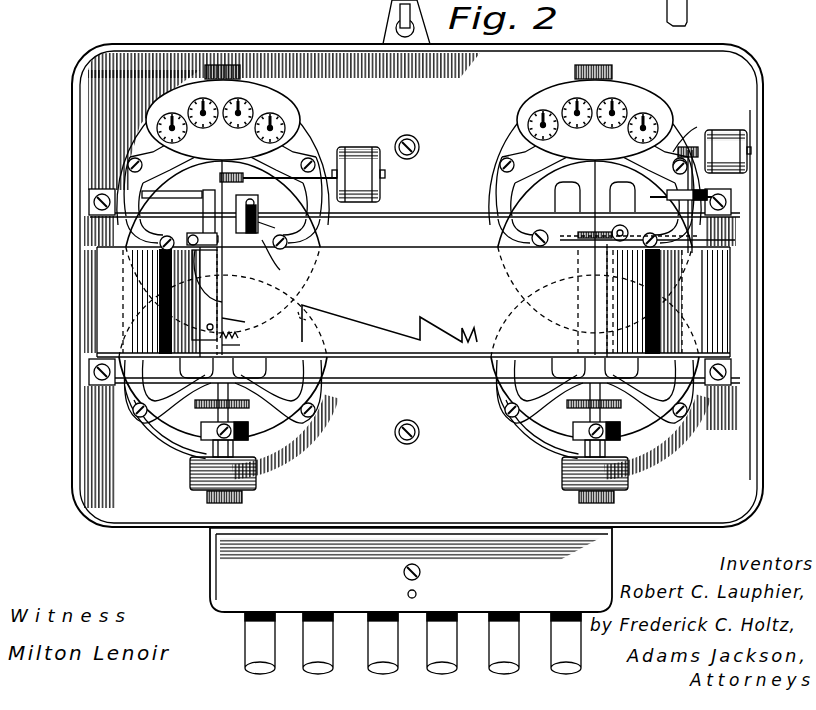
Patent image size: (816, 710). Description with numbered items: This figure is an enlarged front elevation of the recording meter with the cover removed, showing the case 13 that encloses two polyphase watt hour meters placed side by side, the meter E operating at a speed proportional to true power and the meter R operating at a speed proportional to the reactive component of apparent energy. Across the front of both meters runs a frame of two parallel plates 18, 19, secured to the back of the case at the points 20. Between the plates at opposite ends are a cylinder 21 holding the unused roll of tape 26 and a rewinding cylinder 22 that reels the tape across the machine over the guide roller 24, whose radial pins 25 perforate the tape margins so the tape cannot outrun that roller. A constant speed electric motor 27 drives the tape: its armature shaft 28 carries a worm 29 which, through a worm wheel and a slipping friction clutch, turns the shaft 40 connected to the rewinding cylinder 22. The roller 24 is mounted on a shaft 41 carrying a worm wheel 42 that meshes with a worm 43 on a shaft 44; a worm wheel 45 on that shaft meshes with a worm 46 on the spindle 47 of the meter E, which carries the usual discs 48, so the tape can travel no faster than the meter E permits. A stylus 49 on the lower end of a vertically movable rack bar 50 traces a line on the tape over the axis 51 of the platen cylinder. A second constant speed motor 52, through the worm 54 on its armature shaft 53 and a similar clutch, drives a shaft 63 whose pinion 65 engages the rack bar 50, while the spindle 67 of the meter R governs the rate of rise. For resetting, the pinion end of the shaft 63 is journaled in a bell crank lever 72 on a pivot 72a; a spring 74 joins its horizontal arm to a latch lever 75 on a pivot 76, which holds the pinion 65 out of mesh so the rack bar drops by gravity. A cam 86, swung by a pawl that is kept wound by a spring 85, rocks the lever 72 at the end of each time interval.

The case 13 is at (712, 46).
The worm 46 is at (690, 10).
The polyphase watt hour meter R is at (312, 133).
The polyphase watt hour meter E is at (500, 135).
The plate 18 is at (418, 217).
The plate 19 is at (447, 358).
The securing point 20 is at (90, 199).
The cylinder 21 is at (100, 317).
The rewinding cylinder 22 is at (748, 276).
The guide roller 24 is at (580, 355).
The radial pins 25 is at (241, 346).
The tape 26 is at (392, 250).
The constant speed electric motor 27 is at (750, 140).
The armature shaft 28 is at (682, 146).
The worm 29 is at (698, 150).
The shaft 40 is at (693, 237).
The shaft 41 is at (600, 244).
The worm wheel 42 is at (590, 238).
The worm 43 is at (618, 242).
The shaft 44 is at (612, 258).
The worm wheel 45 is at (628, 230).
The spindle 47 is at (598, 200).
The discs 48 is at (548, 196).
The stylus 49 is at (235, 335).
The rack bar 50 is at (289, 312).
The axis 51 is at (688, 192).
The constant speed motor 52 is at (386, 189).
The armature shaft 53 is at (345, 150).
The worm 54 is at (250, 172).
The shaft 63 is at (210, 262).
The pinion 65 is at (217, 245).
The spindle 67 is at (220, 176).
The bell crank lever 72 is at (210, 225).
The pivot 72a is at (205, 196).
The spring 74 is at (274, 259).
The latch lever 75 is at (222, 286).
The pivot 76 is at (232, 304).
The spring 85 is at (260, 205).
The cam 86 is at (275, 227).